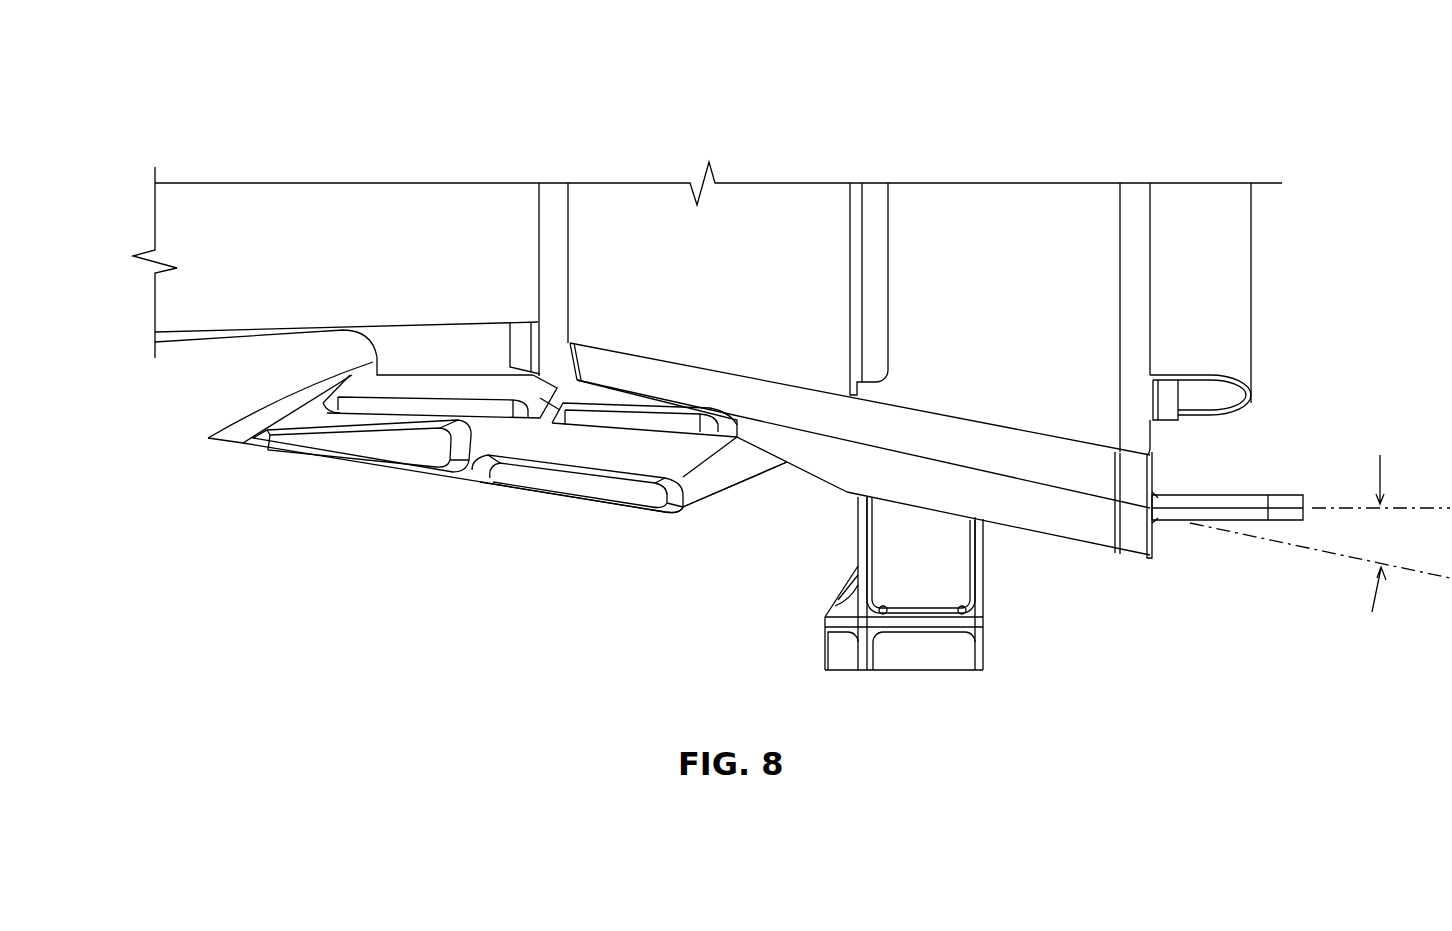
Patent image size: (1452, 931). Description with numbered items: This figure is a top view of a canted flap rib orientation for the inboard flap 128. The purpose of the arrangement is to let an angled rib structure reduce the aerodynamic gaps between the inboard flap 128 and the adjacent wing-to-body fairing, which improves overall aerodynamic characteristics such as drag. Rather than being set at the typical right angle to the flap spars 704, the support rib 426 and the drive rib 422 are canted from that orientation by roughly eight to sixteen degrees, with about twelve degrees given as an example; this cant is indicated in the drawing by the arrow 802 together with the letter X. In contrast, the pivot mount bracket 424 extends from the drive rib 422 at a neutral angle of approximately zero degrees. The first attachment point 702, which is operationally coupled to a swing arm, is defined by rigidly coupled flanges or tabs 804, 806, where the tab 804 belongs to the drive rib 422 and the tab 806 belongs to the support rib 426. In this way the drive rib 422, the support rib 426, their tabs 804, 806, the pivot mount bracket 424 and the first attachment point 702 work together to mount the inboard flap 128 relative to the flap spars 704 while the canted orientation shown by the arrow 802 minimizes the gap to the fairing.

The inboard flap 128 is at (645, 248).
The flap spars 704 is at (872, 202).
The drive rib 422 is at (1027, 505).
The support rib 426 is at (813, 405).
The pivot mount bracket 424 is at (918, 648).
The flange or tab 804 is at (1208, 513).
The flange or tab 806 is at (1250, 497).
The first attachment point 702 is at (1283, 515).
The arrow 802 is at (1380, 407).